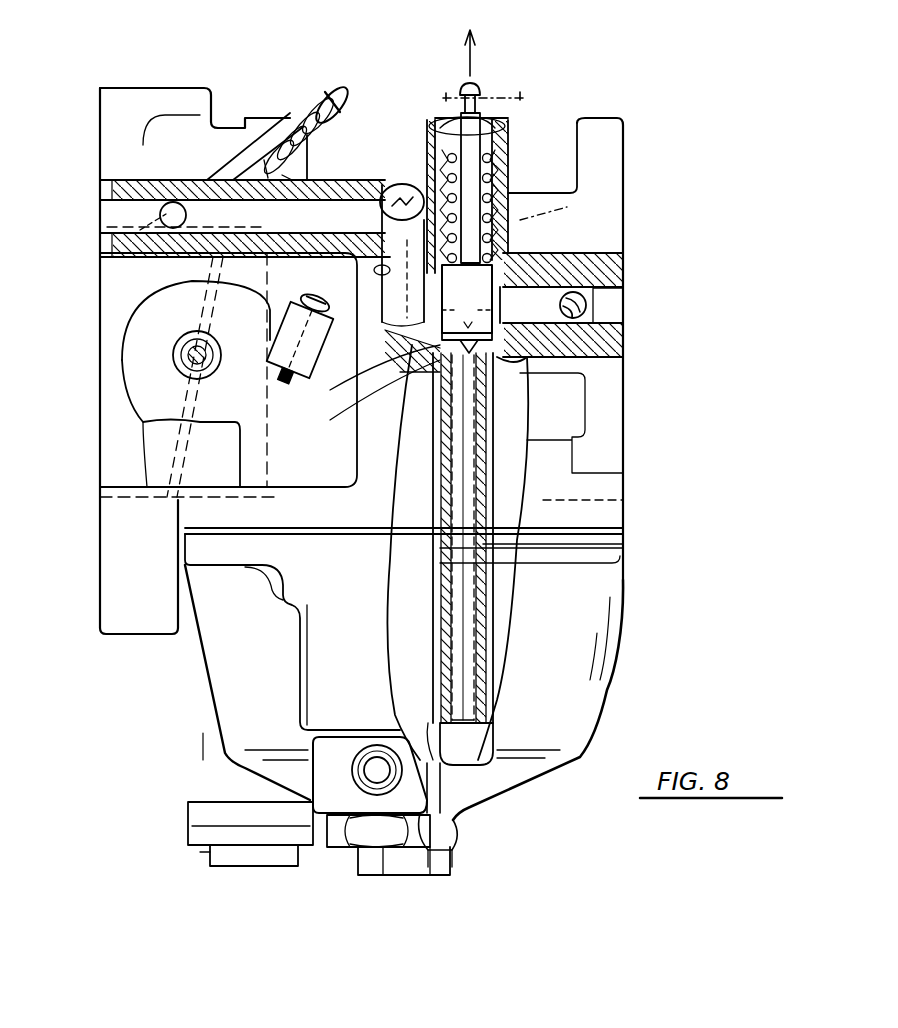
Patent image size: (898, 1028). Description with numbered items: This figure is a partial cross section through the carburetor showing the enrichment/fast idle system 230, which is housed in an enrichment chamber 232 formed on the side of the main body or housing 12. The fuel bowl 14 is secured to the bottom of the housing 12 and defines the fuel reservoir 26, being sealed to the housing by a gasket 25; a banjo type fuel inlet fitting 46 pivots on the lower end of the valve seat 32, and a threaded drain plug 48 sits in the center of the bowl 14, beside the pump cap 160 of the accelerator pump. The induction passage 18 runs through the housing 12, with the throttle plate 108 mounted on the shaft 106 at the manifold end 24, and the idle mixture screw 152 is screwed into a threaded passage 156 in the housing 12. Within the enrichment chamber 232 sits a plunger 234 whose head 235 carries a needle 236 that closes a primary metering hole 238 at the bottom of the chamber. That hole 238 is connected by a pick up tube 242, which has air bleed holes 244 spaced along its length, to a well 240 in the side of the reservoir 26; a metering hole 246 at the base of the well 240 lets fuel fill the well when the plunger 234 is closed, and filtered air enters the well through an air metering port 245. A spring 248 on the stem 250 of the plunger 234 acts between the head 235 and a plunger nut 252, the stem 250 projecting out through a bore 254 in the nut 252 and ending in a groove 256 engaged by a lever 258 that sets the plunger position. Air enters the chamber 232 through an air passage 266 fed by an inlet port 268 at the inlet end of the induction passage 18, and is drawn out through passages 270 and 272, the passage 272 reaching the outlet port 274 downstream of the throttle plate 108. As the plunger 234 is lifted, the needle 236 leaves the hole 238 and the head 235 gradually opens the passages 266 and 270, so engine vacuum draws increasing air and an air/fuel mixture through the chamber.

The main body or housing 12 is at (100, 122).
The fuel bowl 14 is at (600, 718).
The induction passage 18 is at (615, 500).
The manifold end 24 is at (160, 492).
The gasket 25 is at (623, 530).
The fuel reservoir 26 is at (424, 613).
The valve seat 32 is at (343, 835).
The banjo type fuel inlet fitting 46 is at (453, 800).
The threaded drain plug 48 is at (402, 872).
The shaft 106 is at (175, 355).
The throttle plate 108 is at (160, 438).
The idle mixture screw 152 is at (332, 88).
The threaded passage 156 is at (300, 112).
The pump cap 160 is at (245, 870).
The enrichment/fast idle system 230 is at (737, 350).
The enrichment chamber 232 is at (440, 340).
The plunger 234 is at (483, 283).
The head 235 is at (497, 275).
The needle 236 is at (445, 352).
The primary metering hole 238 is at (537, 373).
The well 240 is at (478, 738).
The pick up tube 242 is at (475, 622).
The air bleed holes 244 is at (617, 543).
The air metering port 245 is at (453, 493).
The metering hole 246 is at (430, 713).
The spring 248 is at (505, 195).
The stem 250 is at (478, 82).
The plunger nut 252 is at (510, 120).
The bore 254 is at (455, 140).
The groove 256 is at (445, 106).
The lever 258 is at (520, 82).
The air passage 266 is at (503, 367).
The inlet port 268 is at (503, 313).
The passage 270 is at (374, 268).
The passage 272 is at (340, 195).
The outlet port 274 is at (188, 197).